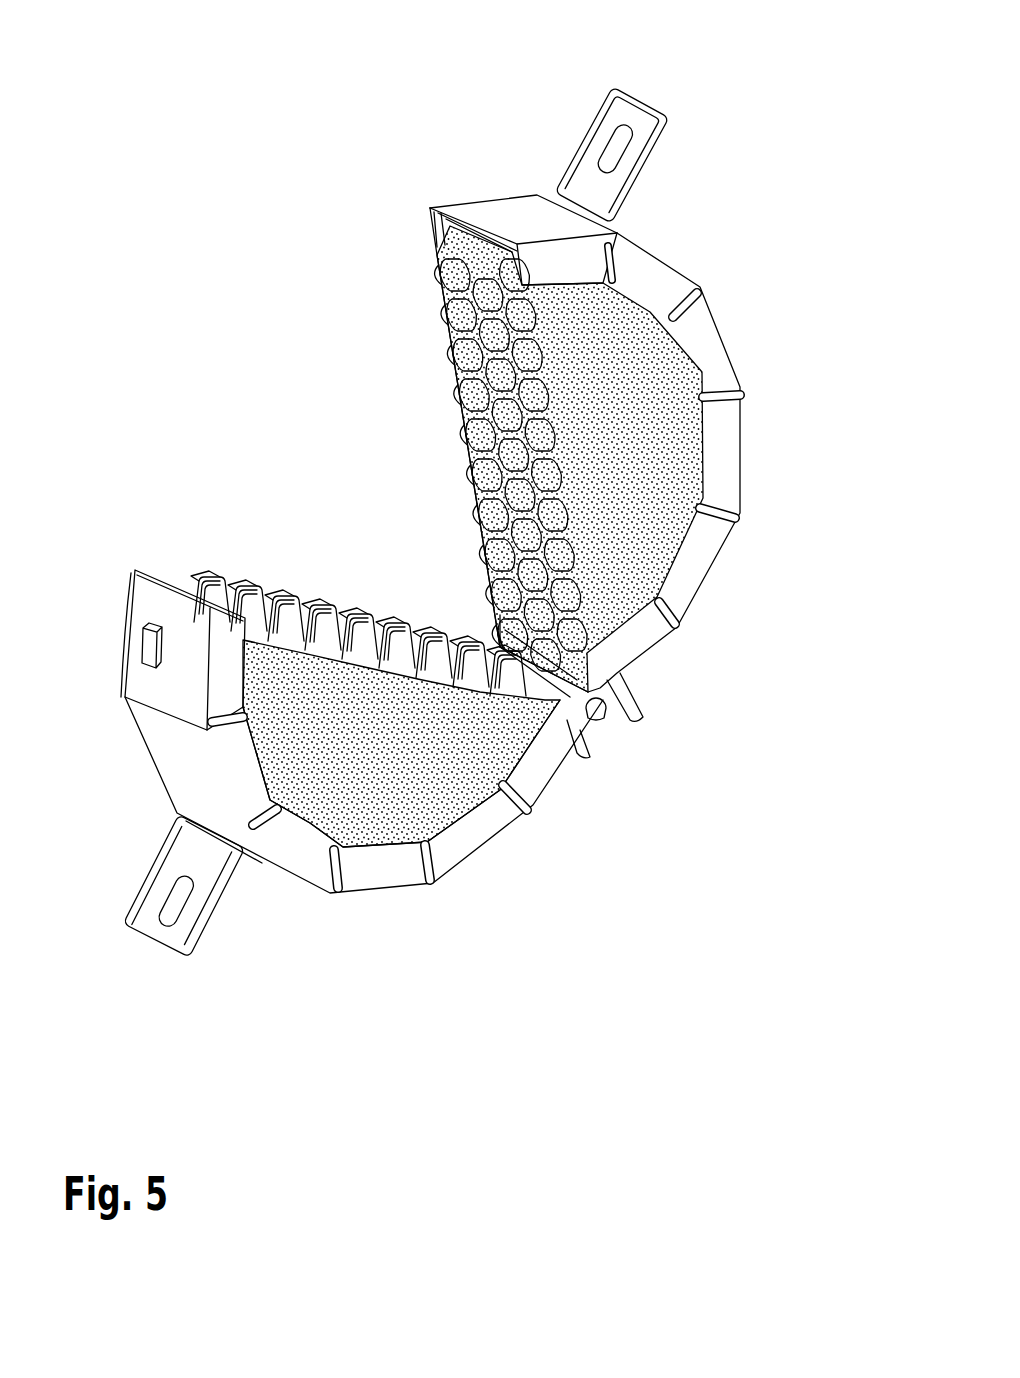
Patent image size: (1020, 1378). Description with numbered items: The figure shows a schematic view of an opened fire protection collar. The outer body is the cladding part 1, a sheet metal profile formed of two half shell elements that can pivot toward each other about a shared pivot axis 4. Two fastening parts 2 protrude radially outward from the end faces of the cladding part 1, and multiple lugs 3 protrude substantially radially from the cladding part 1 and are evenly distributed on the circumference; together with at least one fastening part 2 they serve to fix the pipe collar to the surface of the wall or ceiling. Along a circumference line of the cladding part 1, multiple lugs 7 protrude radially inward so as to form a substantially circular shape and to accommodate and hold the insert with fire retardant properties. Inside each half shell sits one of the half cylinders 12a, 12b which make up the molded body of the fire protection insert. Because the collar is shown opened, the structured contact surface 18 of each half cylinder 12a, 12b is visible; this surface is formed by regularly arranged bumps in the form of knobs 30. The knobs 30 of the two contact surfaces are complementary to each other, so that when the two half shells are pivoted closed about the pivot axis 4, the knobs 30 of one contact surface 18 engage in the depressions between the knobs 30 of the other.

The cladding part 1 is at (148, 780).
The fastening part 2 is at (590, 105).
The lug 3 is at (141, 650).
The pivot axis 4 is at (617, 740).
The lug 7 is at (633, 270).
The half cylinder 12a is at (658, 355).
The half cylinder 12b is at (433, 777).
The contact surface 18 is at (553, 407).
The knob 30 is at (457, 470).